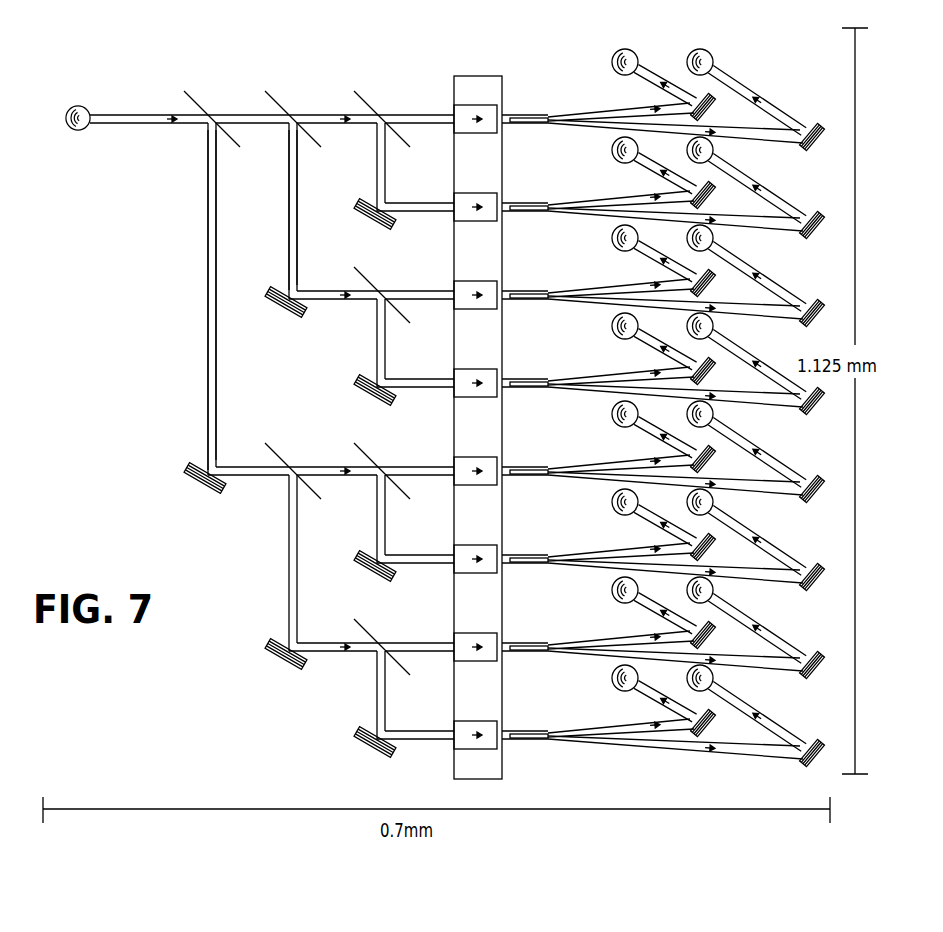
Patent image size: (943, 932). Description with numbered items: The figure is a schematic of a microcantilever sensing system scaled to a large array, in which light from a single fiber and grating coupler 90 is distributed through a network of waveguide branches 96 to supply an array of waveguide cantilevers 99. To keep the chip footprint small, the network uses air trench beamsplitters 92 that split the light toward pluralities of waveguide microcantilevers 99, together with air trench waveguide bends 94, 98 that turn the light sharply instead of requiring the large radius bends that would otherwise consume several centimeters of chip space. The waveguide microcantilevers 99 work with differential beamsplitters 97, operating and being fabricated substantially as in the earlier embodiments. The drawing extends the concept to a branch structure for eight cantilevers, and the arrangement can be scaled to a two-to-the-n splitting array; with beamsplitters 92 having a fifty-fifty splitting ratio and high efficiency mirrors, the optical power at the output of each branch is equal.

The fiber and grating coupler 90 is at (90, 113).
The air trench beamsplitter 92 is at (355, 92).
The air trench waveguide bend 94 is at (363, 219).
The waveguide branch 96 is at (209, 213).
The differential beamsplitter 97 is at (538, 117).
The air trench waveguide bend 98 is at (715, 95).
The waveguide microcantilever 99 is at (492, 117).